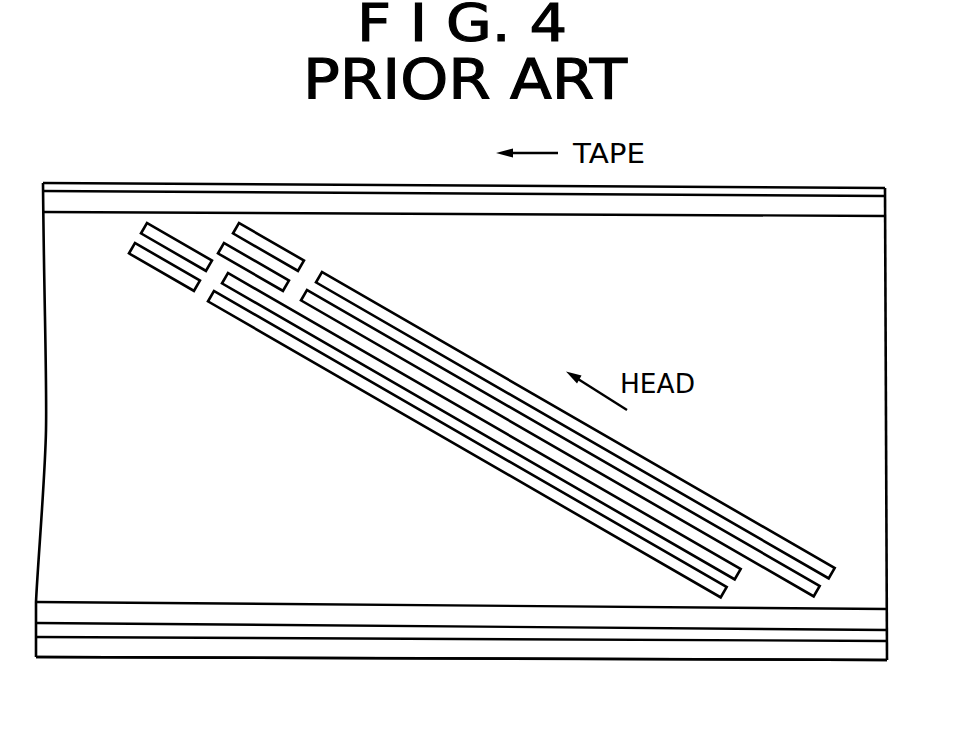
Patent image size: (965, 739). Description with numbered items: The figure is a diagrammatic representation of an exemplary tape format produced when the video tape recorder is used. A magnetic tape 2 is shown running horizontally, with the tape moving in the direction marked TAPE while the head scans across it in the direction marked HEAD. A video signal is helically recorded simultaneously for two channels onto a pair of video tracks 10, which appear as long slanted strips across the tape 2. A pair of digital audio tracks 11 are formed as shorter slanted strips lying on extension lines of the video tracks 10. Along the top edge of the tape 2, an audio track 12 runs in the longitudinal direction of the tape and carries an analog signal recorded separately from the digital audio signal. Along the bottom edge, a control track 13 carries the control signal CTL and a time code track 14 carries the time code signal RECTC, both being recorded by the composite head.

The magnetic tape 2 is at (862, 315).
The video tracks 10 is at (396, 323).
The digital audio tracks 11 is at (282, 261).
The audio track 12 is at (757, 207).
The control track 13 is at (168, 612).
The time code track 14 is at (872, 650).